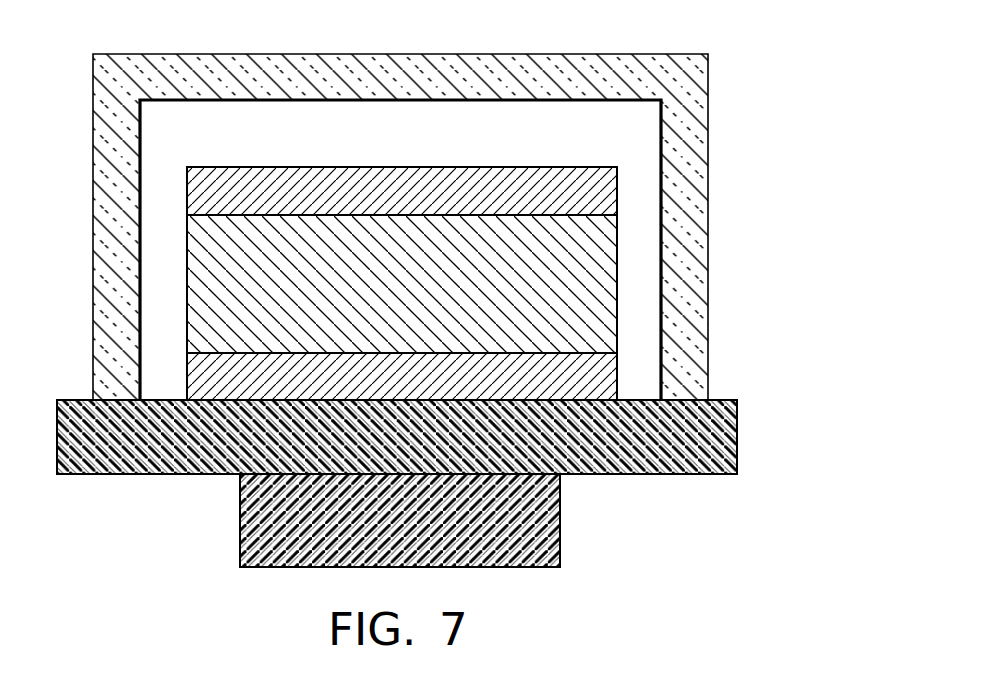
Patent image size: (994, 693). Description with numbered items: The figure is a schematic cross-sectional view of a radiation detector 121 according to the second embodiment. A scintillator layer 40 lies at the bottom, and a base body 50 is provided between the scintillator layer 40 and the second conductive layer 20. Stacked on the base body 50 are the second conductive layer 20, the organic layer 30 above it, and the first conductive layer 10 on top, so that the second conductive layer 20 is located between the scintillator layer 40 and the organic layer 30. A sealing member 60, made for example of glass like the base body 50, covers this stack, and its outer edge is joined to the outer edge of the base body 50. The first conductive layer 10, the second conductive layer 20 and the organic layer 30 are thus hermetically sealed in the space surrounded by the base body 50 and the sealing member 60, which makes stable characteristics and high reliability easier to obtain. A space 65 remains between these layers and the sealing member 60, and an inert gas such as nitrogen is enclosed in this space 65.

The radiation detector 121 is at (808, 95).
The space 65 is at (597, 127).
The sealing member 60 is at (688, 157).
The first conductive layer 10 is at (600, 192).
The organic layer 30 is at (588, 292).
The second conductive layer 20 is at (592, 377).
The base body 50 is at (697, 438).
The scintillator layer 40 is at (548, 535).